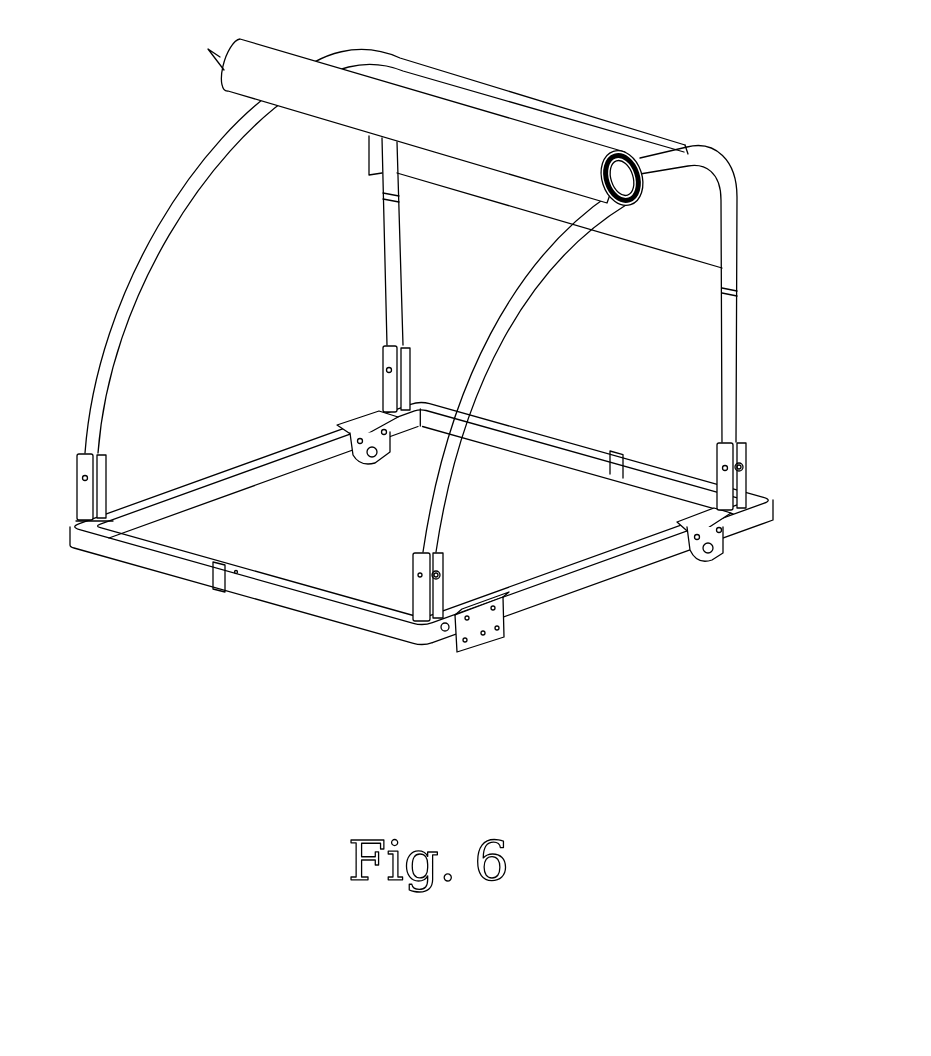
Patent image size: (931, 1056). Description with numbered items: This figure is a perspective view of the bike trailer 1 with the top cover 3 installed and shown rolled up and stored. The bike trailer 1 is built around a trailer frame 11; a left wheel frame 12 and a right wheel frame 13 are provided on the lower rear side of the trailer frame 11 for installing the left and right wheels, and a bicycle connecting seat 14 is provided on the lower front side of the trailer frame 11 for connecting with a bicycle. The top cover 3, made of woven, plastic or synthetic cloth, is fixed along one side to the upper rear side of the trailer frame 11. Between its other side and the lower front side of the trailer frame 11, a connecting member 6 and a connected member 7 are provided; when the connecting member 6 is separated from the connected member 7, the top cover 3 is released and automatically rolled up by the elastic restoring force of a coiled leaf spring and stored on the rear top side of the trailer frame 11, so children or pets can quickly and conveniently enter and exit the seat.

The bike trailer 1 is at (421, 561).
The top cover 3 is at (503, 103).
The connecting member 6 is at (211, 51).
The connected member 7 is at (447, 631).
The trailer frame 11 is at (272, 610).
The left wheel frame 12 is at (362, 413).
The right wheel frame 13 is at (710, 525).
The bicycle connecting seat 14 is at (480, 642).